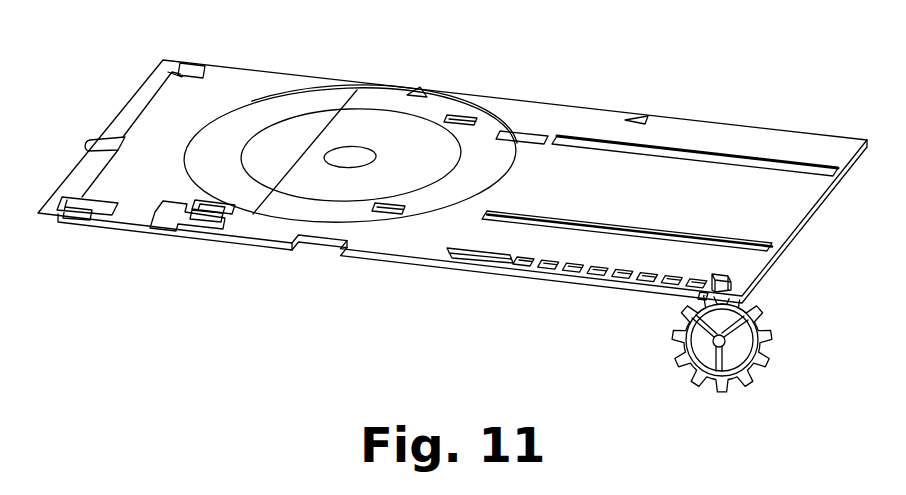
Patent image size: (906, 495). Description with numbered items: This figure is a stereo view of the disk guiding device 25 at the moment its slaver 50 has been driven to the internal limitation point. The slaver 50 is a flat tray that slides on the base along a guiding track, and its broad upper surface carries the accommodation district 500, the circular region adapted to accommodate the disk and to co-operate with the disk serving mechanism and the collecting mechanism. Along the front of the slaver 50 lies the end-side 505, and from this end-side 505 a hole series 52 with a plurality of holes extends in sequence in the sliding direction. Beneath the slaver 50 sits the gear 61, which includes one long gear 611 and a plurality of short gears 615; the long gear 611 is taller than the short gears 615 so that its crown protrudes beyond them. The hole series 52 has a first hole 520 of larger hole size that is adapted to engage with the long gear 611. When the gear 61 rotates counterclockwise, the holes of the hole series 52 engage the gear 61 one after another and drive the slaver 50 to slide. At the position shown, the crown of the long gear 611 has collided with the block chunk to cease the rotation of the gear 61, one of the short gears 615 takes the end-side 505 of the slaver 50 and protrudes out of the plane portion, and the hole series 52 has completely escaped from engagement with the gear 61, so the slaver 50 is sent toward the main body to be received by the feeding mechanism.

The disk guiding device 25 is at (774, 59).
The end-side 505 is at (785, 237).
The accommodation district 500 is at (385, 108).
The slaver 50 is at (697, 138).
The hole series 52 is at (630, 250).
The first hole 520 is at (448, 261).
The long gear 611 is at (728, 268).
The gear 61 is at (776, 361).
The short gears 615 is at (671, 338).